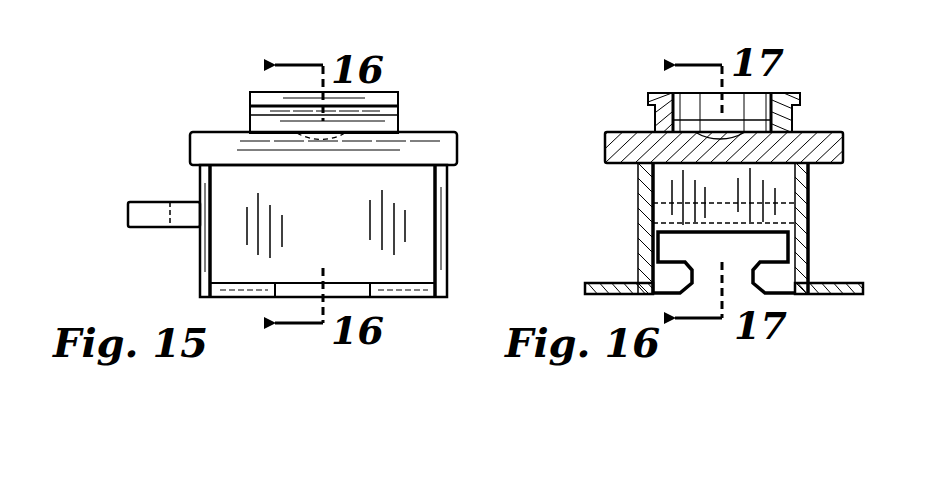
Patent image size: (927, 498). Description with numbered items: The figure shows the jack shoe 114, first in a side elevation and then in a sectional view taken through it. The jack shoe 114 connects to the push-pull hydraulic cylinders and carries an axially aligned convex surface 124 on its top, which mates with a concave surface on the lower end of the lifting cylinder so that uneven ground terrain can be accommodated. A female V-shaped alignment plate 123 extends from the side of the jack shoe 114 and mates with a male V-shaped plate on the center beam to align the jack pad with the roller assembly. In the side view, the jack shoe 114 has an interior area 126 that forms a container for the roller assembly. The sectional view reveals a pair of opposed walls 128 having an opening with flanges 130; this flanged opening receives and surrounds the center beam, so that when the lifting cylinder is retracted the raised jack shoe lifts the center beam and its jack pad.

In FIG. 15, the jack shoe 114 is at (441, 237).
In FIG. 16, the jack shoe 114 is at (812, 192).
In FIG. 15, the female V-shaped alignment plate 123 is at (155, 212).
In FIG. 15, the convex surface 124 is at (328, 135).
In FIG. 16, the convex surface 124 is at (730, 135).
In FIG. 15, the interior area 126 is at (333, 192).
In FIG. 16, the opposed walls 128 is at (723, 195).
In FIG. 16, the flanges 130 is at (680, 277).